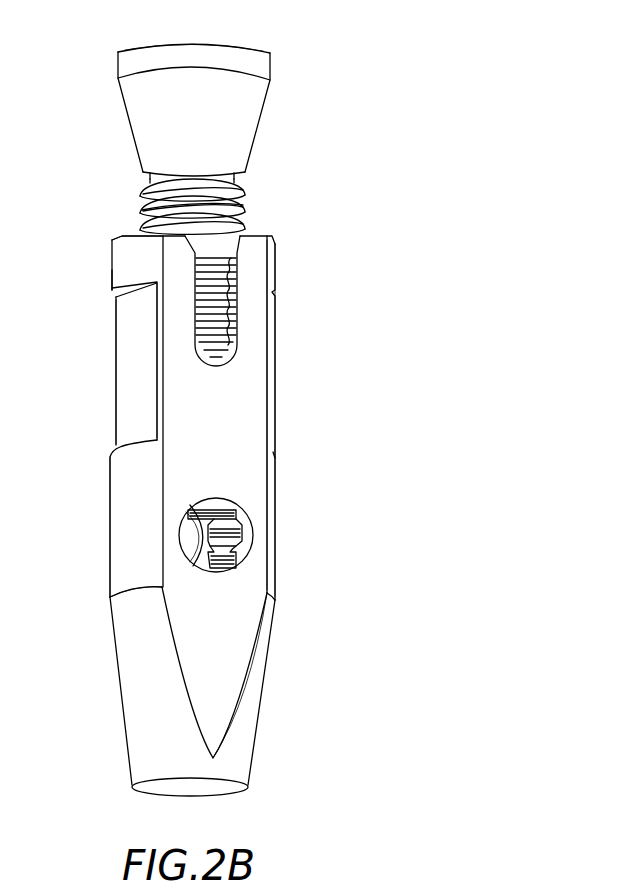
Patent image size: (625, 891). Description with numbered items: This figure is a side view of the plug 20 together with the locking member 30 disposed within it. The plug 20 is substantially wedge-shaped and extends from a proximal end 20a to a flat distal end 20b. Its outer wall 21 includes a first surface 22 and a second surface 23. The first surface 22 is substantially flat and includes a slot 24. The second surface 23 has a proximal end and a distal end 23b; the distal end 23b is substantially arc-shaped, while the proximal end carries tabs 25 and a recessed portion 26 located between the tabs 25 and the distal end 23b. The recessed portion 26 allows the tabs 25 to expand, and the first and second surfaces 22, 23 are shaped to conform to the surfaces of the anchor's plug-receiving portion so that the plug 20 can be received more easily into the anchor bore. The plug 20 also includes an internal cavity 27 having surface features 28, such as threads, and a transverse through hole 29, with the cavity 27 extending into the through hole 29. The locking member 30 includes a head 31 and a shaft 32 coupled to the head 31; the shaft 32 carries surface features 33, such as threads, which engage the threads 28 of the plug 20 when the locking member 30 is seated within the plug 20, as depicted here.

The plug 20 is at (255, 388).
The proximal end 20a is at (122, 236).
The distal end 20b is at (228, 789).
The outer wall 21 is at (264, 684).
The first surface 22 is at (248, 603).
The second surface 23 is at (117, 470).
The distal end 23b is at (117, 577).
The slot 24 is at (232, 332).
The tabs 25 is at (272, 252).
The recessed portion 26 is at (116, 360).
The internal cavity 27 is at (218, 512).
The surface features 28 is at (243, 531).
The transverse through hole 29 is at (185, 537).
The locking member 30 is at (268, 106).
The head 31 is at (210, 52).
The shaft 32 is at (245, 222).
The surface features 33 is at (142, 213).